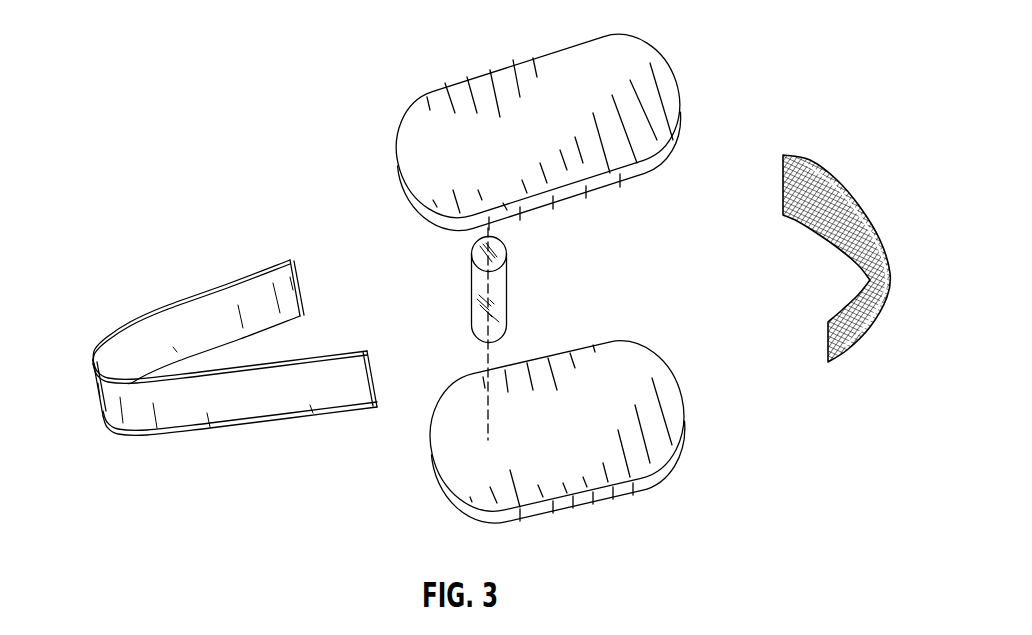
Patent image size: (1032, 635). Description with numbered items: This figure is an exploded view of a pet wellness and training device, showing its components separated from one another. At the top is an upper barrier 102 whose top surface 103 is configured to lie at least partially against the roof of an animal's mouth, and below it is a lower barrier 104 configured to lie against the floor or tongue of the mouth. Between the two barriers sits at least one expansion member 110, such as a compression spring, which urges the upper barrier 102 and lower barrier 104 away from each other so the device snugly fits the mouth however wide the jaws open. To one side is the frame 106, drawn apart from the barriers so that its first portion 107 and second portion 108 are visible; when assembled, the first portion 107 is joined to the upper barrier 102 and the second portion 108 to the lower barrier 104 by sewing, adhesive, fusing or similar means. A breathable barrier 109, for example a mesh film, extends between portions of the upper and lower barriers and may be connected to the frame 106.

The upper barrier 102 is at (352, 128).
The top surface 103 is at (539, 153).
The lower barrier 104 is at (678, 450).
The frame 106 is at (93, 395).
The first portion of the frame 107 is at (185, 293).
The second portion of the frame 108 is at (177, 442).
The breathable barrier 109 is at (857, 199).
The expansion member 110 is at (460, 288).